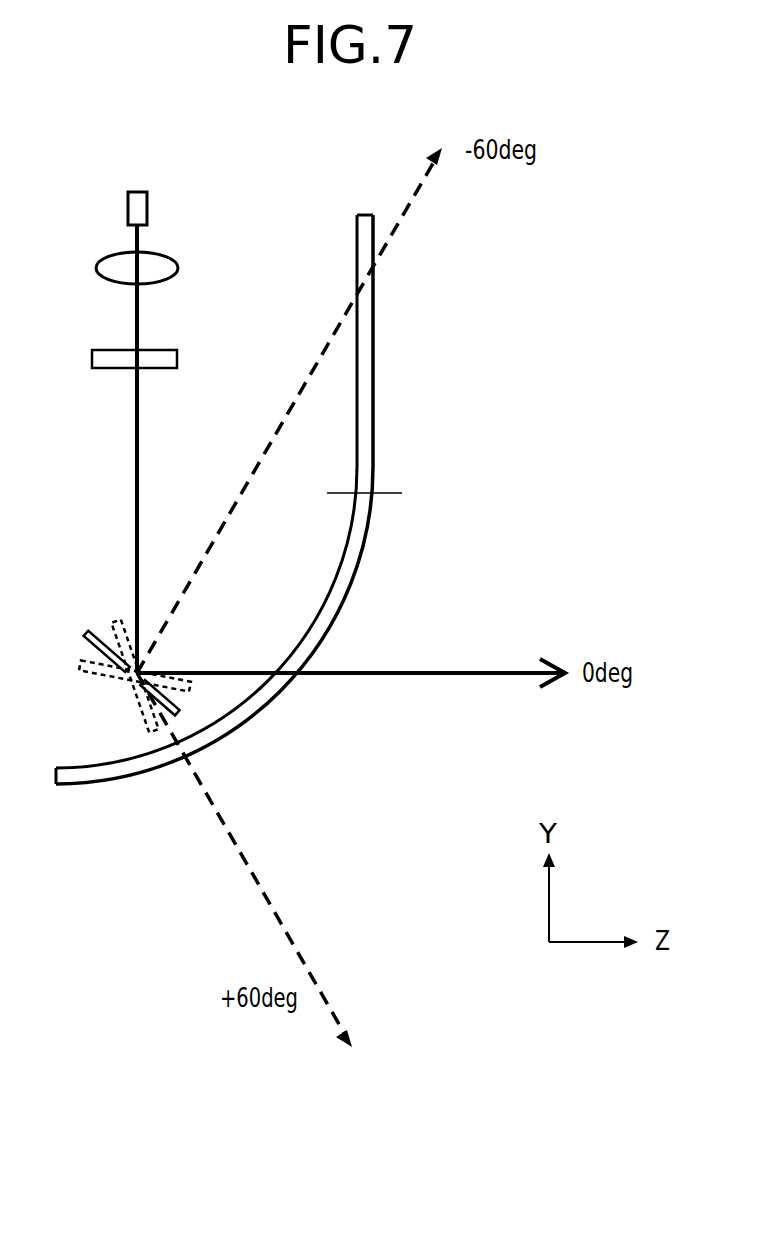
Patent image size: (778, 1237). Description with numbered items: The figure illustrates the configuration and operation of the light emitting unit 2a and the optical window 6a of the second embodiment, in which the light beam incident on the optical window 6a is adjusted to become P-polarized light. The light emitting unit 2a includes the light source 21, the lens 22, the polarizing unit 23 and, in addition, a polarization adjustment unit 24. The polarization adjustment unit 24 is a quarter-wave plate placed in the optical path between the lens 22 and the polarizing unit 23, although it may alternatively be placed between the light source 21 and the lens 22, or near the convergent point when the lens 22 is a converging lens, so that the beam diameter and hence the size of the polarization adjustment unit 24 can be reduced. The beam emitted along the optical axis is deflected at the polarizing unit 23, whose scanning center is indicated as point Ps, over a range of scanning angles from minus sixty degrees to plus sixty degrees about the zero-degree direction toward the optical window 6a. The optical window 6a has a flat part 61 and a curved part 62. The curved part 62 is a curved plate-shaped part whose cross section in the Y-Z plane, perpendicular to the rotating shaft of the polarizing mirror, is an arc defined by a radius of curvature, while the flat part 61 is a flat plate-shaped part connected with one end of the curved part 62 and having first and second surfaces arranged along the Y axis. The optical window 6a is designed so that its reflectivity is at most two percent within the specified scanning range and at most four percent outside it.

The light emitting unit 2a is at (264, 174).
The light source 21 is at (128, 200).
The lens 22 is at (97, 268).
The polarization adjustment unit 24 is at (92, 360).
The polarizing unit 23 is at (88, 638).
The scanning center point Ps is at (168, 655).
The optical window 6a is at (475, 420).
The flat part 61 is at (371, 438).
The curved part 62 is at (353, 555).